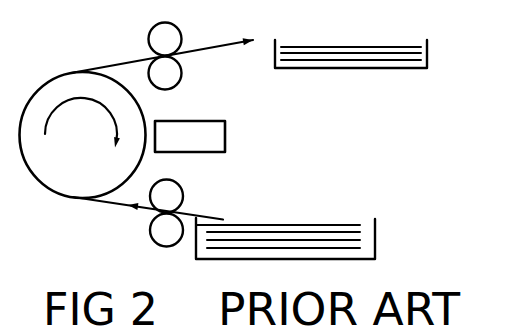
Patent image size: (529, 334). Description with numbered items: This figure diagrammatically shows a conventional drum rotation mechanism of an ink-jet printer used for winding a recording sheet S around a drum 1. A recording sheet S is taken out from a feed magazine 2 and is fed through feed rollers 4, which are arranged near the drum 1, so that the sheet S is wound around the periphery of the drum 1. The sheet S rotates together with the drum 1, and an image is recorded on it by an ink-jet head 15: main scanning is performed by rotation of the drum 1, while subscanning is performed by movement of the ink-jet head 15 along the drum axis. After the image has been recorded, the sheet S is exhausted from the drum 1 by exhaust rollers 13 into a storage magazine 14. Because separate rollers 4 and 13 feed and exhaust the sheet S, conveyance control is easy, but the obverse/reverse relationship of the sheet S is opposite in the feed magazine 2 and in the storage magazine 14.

The drum 1 is at (42, 83).
The exhaust rollers 13 is at (147, 32).
The storage magazine 14 is at (363, 69).
The ink-jet head 15 is at (225, 140).
The feed rollers 4 is at (152, 237).
The feed magazine 2 is at (376, 241).
The recording sheet S is at (297, 224).